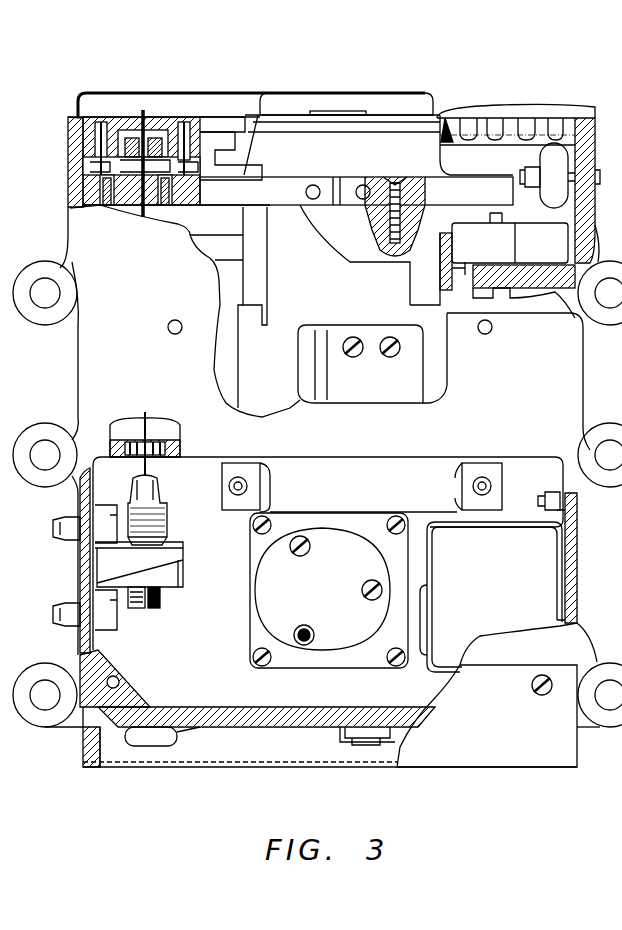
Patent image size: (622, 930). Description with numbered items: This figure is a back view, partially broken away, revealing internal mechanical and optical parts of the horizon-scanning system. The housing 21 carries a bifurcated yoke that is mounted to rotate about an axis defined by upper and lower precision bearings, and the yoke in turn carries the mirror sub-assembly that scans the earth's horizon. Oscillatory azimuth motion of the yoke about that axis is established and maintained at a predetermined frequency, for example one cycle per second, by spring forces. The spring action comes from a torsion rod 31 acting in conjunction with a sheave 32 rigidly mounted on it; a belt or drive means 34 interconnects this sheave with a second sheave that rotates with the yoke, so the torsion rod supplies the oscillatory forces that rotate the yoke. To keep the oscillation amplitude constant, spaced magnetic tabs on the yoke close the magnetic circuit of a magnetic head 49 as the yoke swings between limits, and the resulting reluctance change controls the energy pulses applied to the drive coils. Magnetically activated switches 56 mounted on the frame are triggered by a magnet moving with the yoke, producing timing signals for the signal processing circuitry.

The housing 21 is at (78, 186).
The sheave 32 is at (190, 118).
The belt or drive means 34 is at (232, 132).
The torsion rod 31 is at (160, 418).
The magnetic head 49 is at (494, 262).
The magnetically activated switches 56 is at (150, 745).